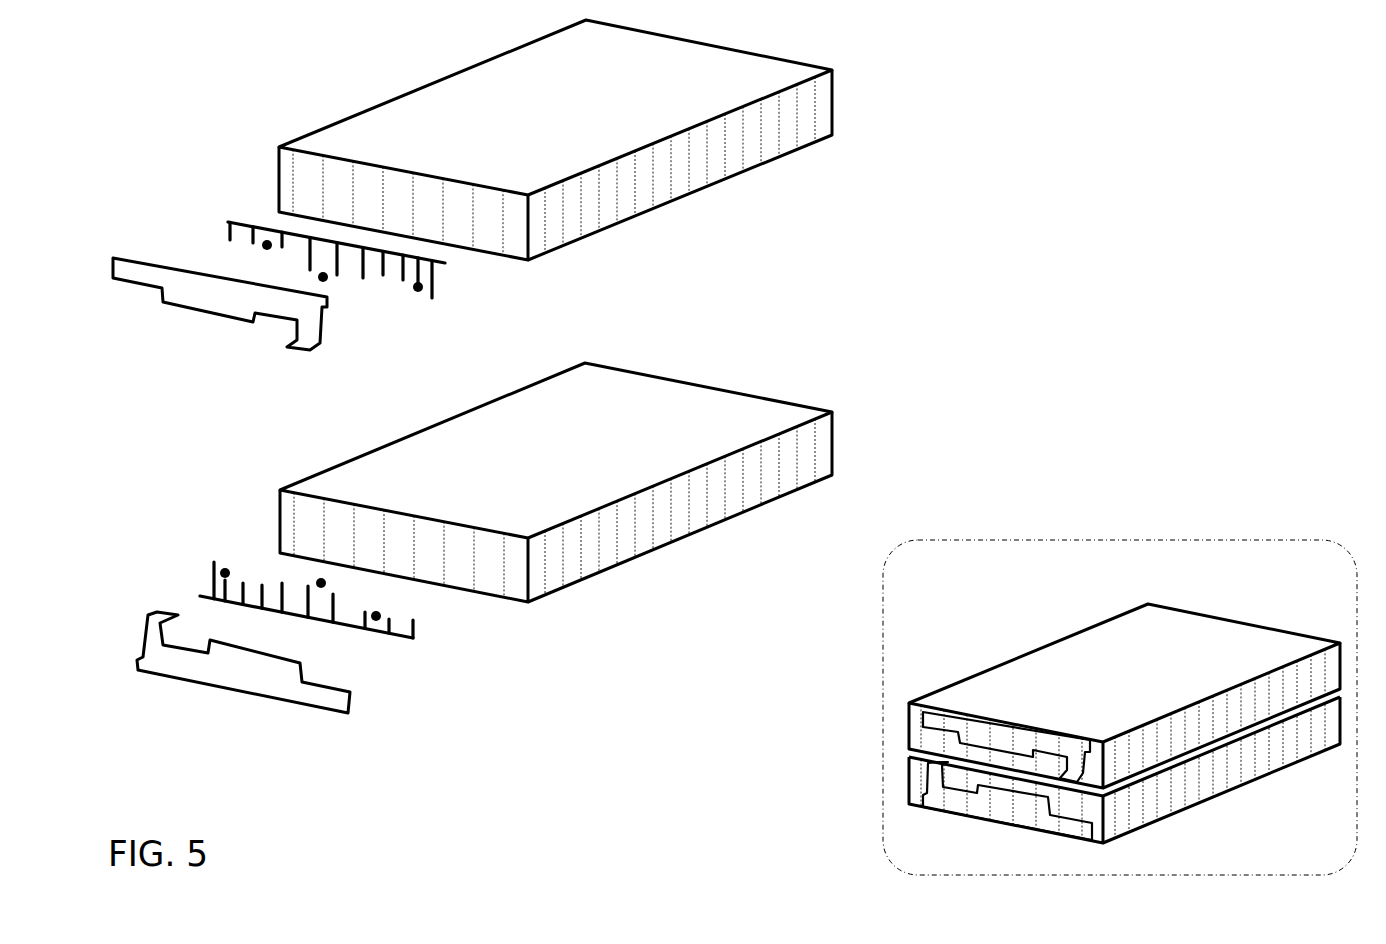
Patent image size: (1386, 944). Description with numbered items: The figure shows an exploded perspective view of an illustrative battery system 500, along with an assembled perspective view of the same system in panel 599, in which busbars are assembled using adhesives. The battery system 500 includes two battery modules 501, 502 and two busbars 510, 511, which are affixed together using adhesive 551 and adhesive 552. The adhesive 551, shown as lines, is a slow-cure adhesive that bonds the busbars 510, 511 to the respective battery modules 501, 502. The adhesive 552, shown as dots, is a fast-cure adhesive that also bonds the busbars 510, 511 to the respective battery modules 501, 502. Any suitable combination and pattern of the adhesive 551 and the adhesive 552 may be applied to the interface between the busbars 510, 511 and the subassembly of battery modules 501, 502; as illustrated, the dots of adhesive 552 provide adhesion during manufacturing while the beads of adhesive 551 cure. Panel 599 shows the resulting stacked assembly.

The battery system 500 is at (944, 52).
The battery module 501 is at (576, 125).
The battery module 502 is at (574, 470).
The busbar 510 is at (158, 265).
The busbar 511 is at (263, 699).
The adhesive 551 is at (233, 221).
The adhesive 552 is at (323, 281).
The panel 599 is at (1274, 591).